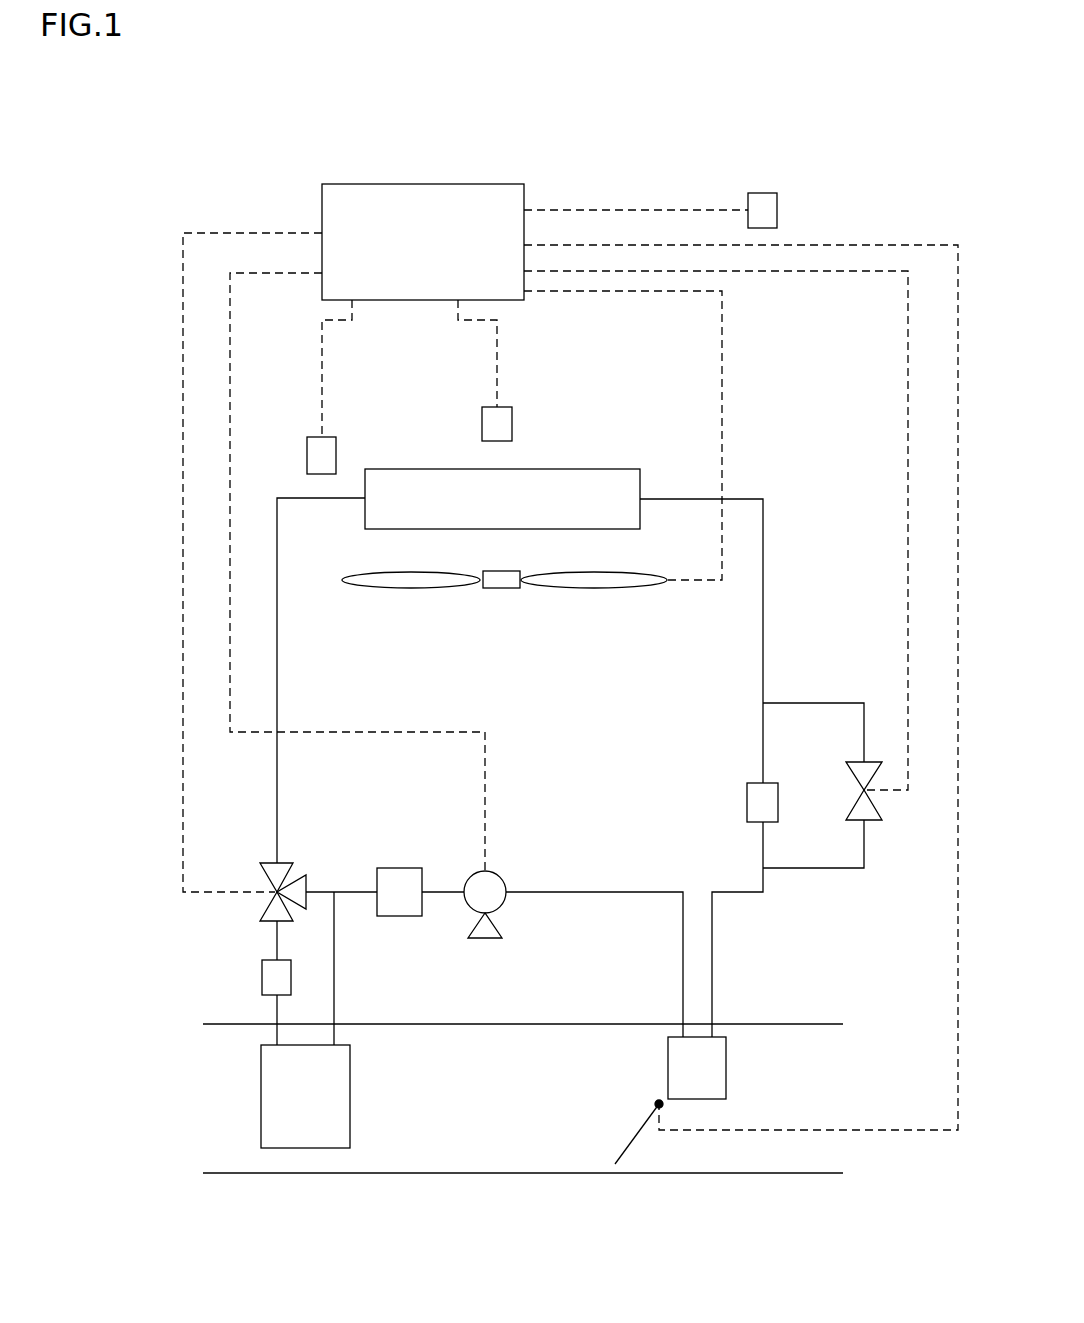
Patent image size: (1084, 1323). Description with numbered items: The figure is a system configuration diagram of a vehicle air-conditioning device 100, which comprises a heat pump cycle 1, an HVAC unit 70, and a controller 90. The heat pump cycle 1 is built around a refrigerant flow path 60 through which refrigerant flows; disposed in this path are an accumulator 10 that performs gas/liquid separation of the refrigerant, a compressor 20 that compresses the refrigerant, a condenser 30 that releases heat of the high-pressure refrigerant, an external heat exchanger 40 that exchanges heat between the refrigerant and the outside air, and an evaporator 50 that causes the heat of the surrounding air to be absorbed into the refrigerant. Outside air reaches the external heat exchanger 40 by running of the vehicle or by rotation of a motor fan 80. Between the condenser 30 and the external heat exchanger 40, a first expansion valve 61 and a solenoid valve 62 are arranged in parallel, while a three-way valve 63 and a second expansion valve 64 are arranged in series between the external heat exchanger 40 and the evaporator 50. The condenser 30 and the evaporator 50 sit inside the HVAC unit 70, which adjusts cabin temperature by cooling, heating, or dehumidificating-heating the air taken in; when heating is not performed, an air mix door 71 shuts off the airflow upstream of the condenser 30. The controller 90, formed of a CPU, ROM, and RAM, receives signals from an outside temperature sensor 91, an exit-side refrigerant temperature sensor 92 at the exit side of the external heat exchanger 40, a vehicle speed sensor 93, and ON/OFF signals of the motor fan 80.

The vehicle air-conditioning device 100 is at (202, 186).
The heat pump cycle 1 is at (153, 620).
The controller 90 is at (334, 210).
The vehicle speed sensor 93 is at (765, 215).
The outside temperature sensor 91 is at (500, 428).
The exit-side refrigerant temperature sensor 92 is at (322, 457).
The external heat exchanger 40 is at (607, 488).
The motor fan 80 is at (592, 585).
The refrigerant flow path 60 is at (765, 596).
The three-way valve 63 is at (272, 874).
The accumulator 10 is at (398, 882).
The compressor 20 is at (486, 895).
The first expansion valve 61 is at (757, 802).
The solenoid valve 62 is at (868, 812).
The second expansion valve 64 is at (272, 977).
The evaporator 50 is at (290, 1111).
The condenser 30 is at (714, 1073).
The air mix door 71 is at (642, 1126).
The HVAC unit 70 is at (213, 1135).